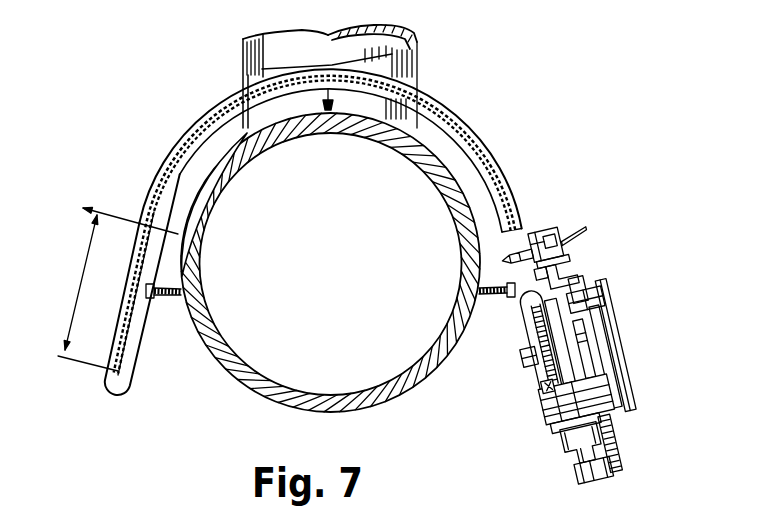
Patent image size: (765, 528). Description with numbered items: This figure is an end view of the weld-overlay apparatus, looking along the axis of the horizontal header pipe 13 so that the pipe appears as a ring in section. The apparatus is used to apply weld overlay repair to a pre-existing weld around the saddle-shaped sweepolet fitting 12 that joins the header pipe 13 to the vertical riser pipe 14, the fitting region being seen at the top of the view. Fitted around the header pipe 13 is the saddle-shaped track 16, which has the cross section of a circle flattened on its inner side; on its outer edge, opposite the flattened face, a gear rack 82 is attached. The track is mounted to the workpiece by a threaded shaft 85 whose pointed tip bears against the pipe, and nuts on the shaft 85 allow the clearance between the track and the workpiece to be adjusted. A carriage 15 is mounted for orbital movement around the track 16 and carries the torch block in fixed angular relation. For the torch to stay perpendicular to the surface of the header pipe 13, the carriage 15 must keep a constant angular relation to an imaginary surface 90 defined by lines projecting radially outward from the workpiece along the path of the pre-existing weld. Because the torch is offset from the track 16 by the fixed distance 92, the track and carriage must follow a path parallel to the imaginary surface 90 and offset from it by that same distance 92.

The sweepolet fitting 12 is at (222, 86).
The header pipe 13 is at (196, 332).
The riser pipe 14 is at (243, 63).
The carriage 15 is at (630, 285).
The track 16 is at (509, 176).
The gear rack 82 is at (157, 171).
The threaded shaft 85 is at (168, 290).
The imaginary surface 90 is at (118, 218).
The torch offset distance 92 is at (80, 277).